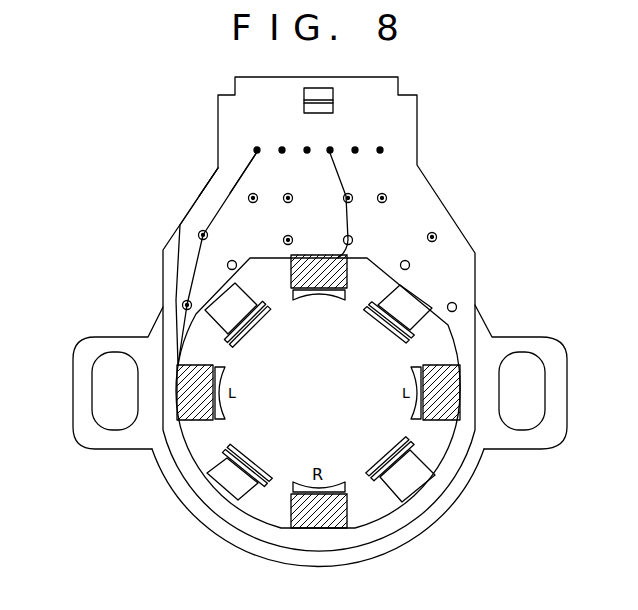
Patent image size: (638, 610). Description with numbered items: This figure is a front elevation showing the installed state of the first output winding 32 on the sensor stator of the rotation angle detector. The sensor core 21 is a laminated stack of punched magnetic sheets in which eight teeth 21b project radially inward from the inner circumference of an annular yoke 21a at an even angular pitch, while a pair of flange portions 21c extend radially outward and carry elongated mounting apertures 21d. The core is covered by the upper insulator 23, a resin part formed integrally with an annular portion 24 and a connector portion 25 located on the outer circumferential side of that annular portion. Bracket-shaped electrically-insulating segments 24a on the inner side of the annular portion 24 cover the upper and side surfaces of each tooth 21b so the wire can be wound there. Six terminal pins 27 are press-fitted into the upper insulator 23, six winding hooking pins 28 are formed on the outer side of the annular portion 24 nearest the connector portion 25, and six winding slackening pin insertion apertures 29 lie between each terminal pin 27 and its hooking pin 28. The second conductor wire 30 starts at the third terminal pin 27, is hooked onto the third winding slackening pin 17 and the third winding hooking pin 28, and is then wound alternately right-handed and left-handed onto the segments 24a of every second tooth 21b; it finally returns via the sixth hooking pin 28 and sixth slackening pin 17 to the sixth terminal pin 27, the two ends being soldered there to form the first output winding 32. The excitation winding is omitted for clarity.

The sensor core 21 is at (496, 329).
The annular yoke 21a is at (170, 478).
The teeth 21b is at (392, 457).
The flange portions 21c is at (511, 445).
The mounting apertures 21d is at (523, 432).
The upper insulator 23 is at (192, 201).
The annular portion 24 is at (210, 287).
The electrically-insulating segments 24a is at (392, 310).
The connector portion 25 is at (238, 112).
The terminal pins 27 is at (384, 150).
The winding hooking pins 28 is at (184, 304).
The winding slackening pin insertion apertures 29 is at (430, 228).
The conductor wire 30 is at (233, 174).
The first output winding 32 is at (307, 290).
The winding slackening pin 17 is at (199, 233).